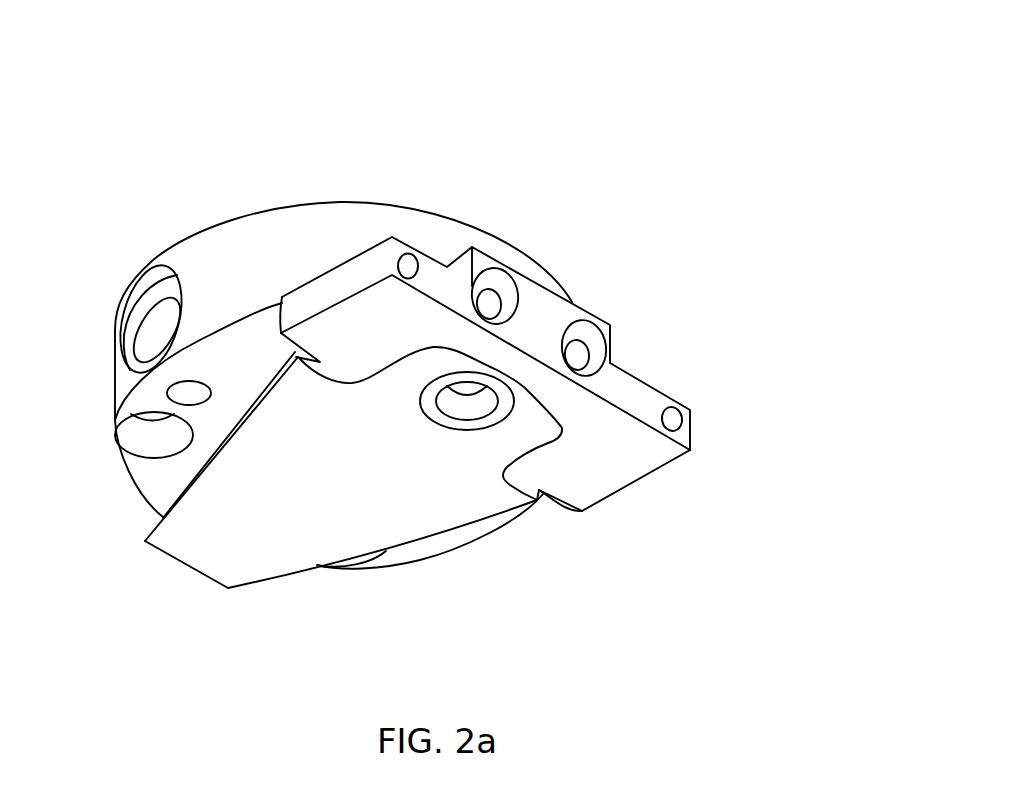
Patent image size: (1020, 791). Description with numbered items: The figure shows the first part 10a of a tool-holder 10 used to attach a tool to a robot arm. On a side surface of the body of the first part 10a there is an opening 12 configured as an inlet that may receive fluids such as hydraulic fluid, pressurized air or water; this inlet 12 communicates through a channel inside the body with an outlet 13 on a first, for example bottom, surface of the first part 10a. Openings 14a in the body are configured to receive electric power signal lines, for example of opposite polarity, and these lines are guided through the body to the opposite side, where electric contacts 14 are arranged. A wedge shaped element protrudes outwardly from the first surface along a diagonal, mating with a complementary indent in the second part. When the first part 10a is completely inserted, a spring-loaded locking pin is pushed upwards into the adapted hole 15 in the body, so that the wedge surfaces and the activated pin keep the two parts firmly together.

The tool-holder 10 is at (714, 93).
The first part 10a is at (659, 348).
The opening (inlet) 12 is at (153, 327).
The outlet 13 is at (148, 436).
The electric contacts 14 is at (283, 330).
The openings 14a is at (412, 267).
The adapted hole 15 is at (463, 407).